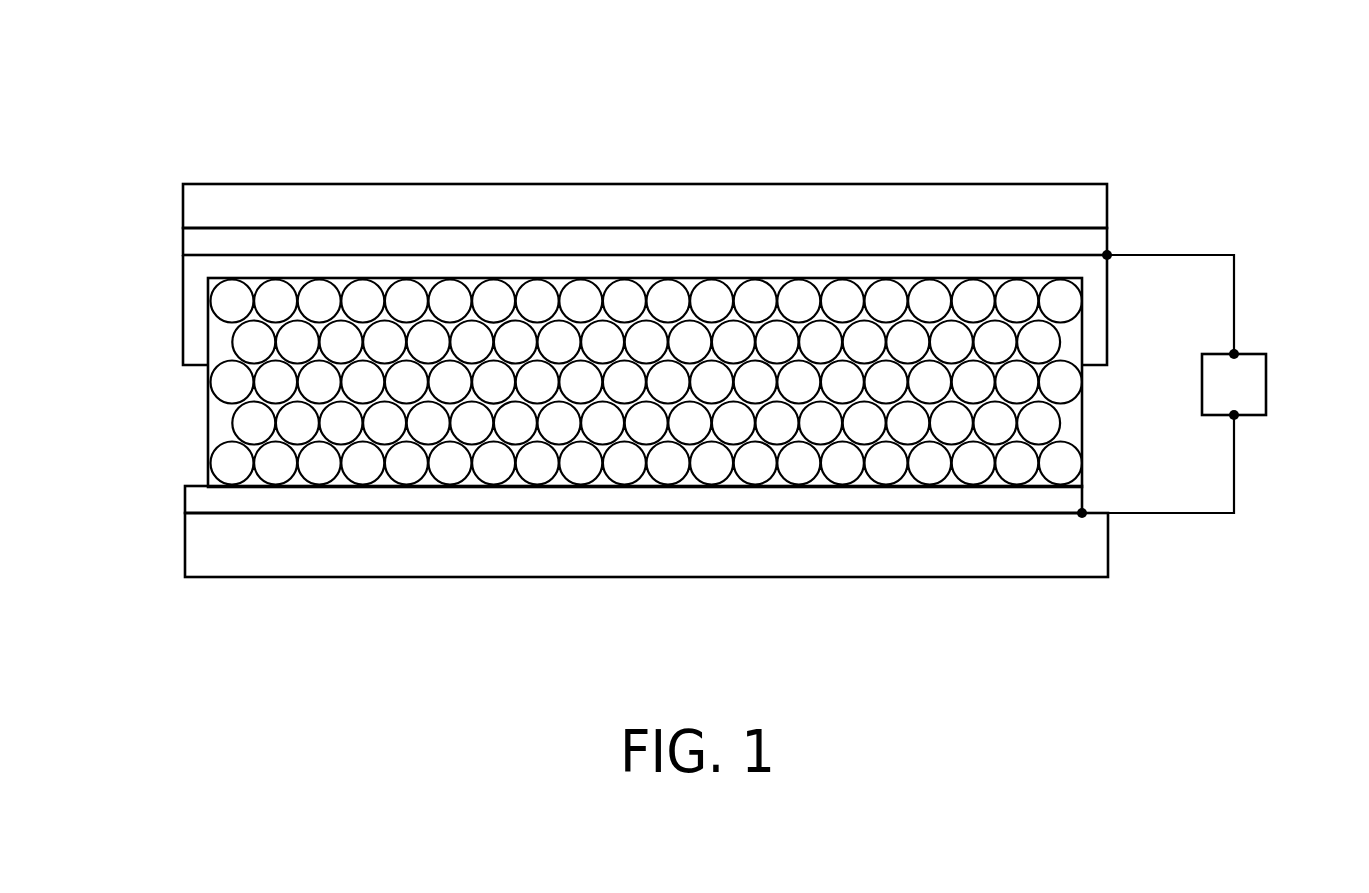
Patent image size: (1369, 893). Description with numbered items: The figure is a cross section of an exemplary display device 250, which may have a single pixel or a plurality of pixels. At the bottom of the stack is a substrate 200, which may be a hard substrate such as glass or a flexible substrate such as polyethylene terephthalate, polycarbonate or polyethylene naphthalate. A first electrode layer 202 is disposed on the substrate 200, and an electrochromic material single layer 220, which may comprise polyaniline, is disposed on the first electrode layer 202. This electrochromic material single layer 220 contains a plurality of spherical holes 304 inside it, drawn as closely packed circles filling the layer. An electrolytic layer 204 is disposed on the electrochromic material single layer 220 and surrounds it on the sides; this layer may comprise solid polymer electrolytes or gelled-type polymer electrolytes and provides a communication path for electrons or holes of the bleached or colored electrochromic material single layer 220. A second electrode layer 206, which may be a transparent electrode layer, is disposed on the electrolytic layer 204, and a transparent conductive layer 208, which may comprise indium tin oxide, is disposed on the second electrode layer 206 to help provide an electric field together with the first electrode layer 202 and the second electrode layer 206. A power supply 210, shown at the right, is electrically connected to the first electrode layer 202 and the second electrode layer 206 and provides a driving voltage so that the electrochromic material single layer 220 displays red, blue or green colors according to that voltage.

The display device 250 is at (253, 130).
The transparent conductive layer 208 is at (192, 207).
The second electrode layer 206 is at (192, 243).
The electrolytic layer 204 is at (192, 314).
The electrochromic material single layer 220 is at (216, 422).
The spherical holes 304 is at (275, 470).
The first electrode layer 202 is at (192, 499).
The substrate 200 is at (192, 542).
The power supply 210 is at (1266, 387).